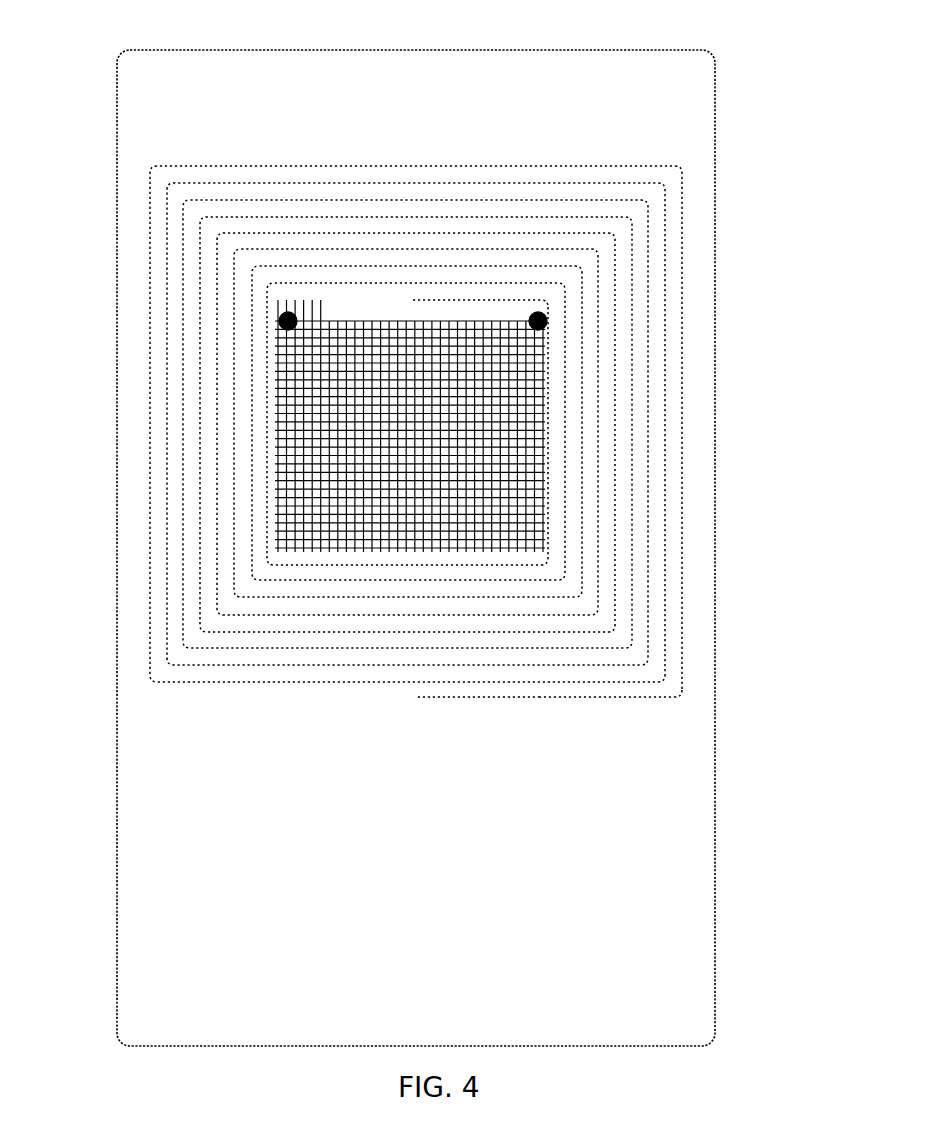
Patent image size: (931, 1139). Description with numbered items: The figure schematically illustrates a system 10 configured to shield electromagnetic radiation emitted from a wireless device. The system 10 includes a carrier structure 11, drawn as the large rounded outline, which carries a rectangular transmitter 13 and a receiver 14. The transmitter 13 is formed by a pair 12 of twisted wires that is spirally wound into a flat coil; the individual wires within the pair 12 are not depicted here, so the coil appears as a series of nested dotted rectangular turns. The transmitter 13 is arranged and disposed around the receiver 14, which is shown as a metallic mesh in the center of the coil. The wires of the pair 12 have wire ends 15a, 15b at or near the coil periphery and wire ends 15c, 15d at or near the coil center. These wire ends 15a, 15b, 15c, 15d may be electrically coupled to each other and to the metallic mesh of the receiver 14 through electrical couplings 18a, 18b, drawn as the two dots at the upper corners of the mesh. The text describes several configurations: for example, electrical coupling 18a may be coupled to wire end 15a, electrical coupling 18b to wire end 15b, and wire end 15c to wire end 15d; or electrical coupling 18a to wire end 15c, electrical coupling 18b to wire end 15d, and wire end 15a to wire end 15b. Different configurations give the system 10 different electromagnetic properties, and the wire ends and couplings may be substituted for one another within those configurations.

The system 10 is at (160, 42).
The carrier structure 11 is at (383, 50).
The pair of wires 12 is at (546, 700).
The transmitter 13 is at (451, 165).
The receiver 14 is at (517, 412).
The wire end 15a is at (439, 709).
The wire end 15b is at (439, 709).
The wire end 15c is at (440, 301).
The wire end 15d is at (440, 301).
The electrical coupling 18a is at (277, 320).
The electrical coupling 18b is at (551, 322).